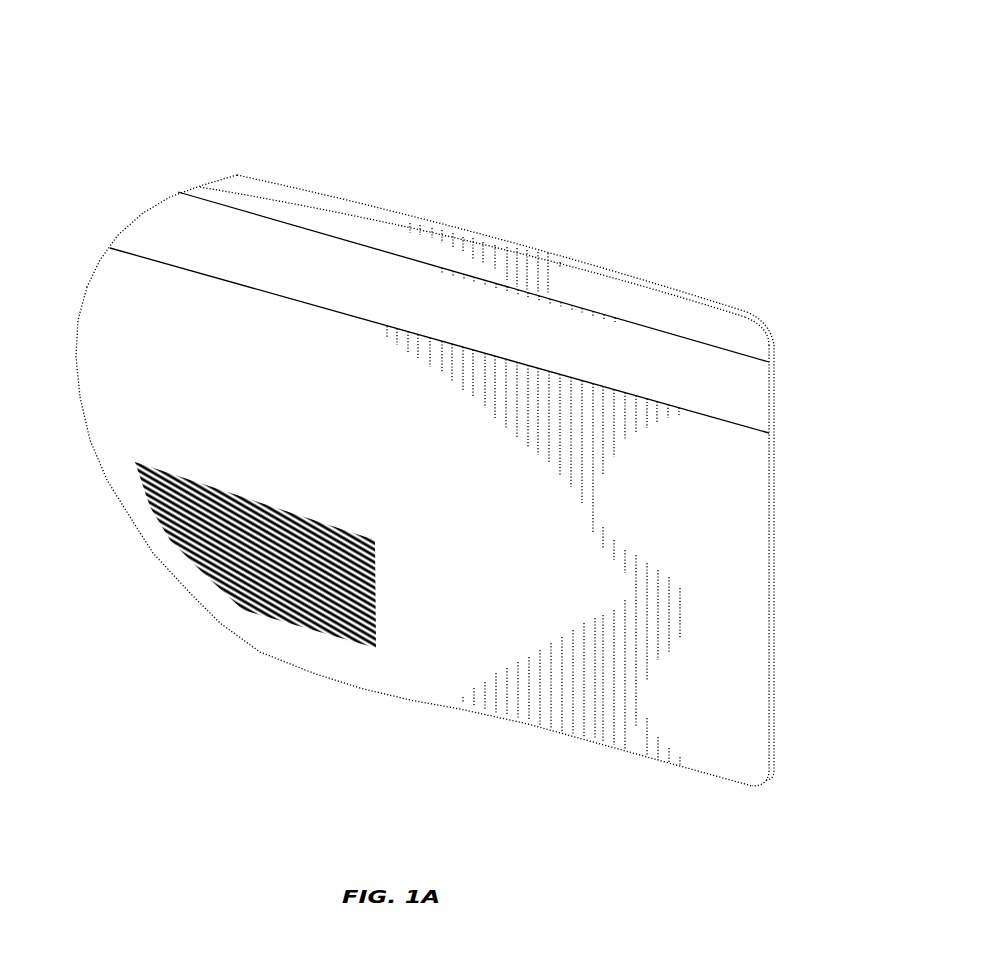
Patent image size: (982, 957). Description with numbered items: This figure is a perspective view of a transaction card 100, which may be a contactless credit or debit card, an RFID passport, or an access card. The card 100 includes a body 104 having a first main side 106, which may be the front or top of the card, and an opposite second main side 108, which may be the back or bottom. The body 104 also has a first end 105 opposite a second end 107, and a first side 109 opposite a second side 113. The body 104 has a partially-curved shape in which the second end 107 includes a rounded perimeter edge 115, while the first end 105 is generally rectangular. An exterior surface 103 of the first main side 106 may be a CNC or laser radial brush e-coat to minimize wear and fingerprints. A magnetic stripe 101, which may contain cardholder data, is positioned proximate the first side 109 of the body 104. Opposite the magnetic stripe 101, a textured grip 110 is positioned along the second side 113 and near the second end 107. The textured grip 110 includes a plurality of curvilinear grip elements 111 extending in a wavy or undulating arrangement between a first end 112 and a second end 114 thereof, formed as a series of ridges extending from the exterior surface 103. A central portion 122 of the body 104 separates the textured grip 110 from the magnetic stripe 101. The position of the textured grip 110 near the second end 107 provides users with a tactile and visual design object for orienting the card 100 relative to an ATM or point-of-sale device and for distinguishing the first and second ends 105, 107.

The transaction card 100 is at (368, 132).
The magnetic stripe 101 is at (630, 343).
The exterior surface 103 is at (326, 415).
The body 104 is at (518, 625).
The first end 105 is at (765, 512).
The first main side 106 is at (773, 390).
The second end 107 is at (66, 355).
The second main side 108 is at (742, 617).
The first side 109 is at (443, 236).
The textured grip 110 is at (288, 645).
The curvilinear grip elements 111 is at (217, 580).
The first end of textured grip 112 is at (147, 522).
The second side 113 is at (455, 690).
The second end of textured grip 114 is at (386, 622).
The rounded perimeter edge 115 is at (100, 267).
The central portion 122 is at (254, 332).